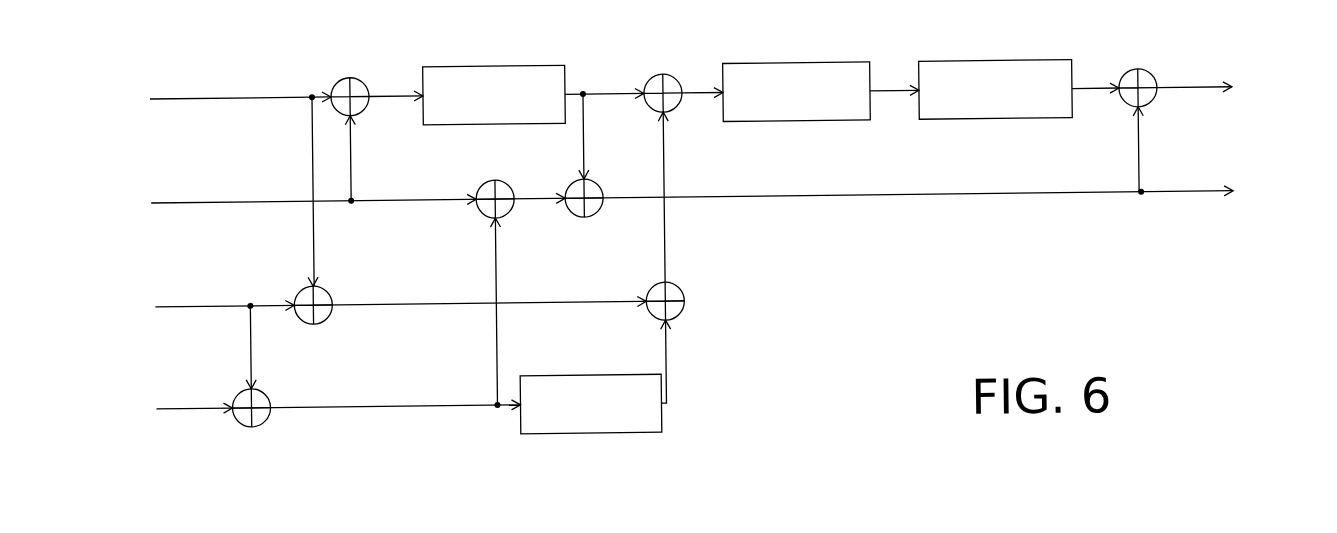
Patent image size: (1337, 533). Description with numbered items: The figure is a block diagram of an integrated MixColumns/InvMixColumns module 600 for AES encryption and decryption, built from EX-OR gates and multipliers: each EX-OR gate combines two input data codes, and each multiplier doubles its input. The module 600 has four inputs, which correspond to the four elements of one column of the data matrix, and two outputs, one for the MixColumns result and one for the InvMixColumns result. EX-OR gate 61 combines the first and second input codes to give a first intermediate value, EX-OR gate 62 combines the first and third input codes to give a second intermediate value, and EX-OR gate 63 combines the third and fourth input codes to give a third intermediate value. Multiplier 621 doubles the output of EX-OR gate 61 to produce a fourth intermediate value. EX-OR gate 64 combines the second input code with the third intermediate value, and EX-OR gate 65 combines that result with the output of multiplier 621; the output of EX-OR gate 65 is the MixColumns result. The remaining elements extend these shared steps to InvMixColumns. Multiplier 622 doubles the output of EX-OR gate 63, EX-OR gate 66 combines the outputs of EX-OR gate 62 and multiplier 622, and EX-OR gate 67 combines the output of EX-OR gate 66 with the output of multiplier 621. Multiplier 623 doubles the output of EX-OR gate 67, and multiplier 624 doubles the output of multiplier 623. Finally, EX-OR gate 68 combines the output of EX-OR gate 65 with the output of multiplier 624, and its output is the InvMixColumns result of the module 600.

The MixColumns/InvMixColumns module 600 is at (709, 251).
The EX-OR gate 61 is at (372, 126).
The EX-OR gate 62 is at (337, 336).
The EX-OR gate 63 is at (277, 440).
The EX-OR gate 64 is at (477, 230).
The EX-OR gate 65 is at (568, 232).
The EX-OR gate 66 is at (690, 337).
The EX-OR gate 67 is at (682, 127).
The EX-OR gate 68 is at (1167, 128).
The multiplier 621 is at (477, 69).
The multiplier 622 is at (553, 380).
The multiplier 623 is at (787, 69).
The multiplier 624 is at (973, 68).